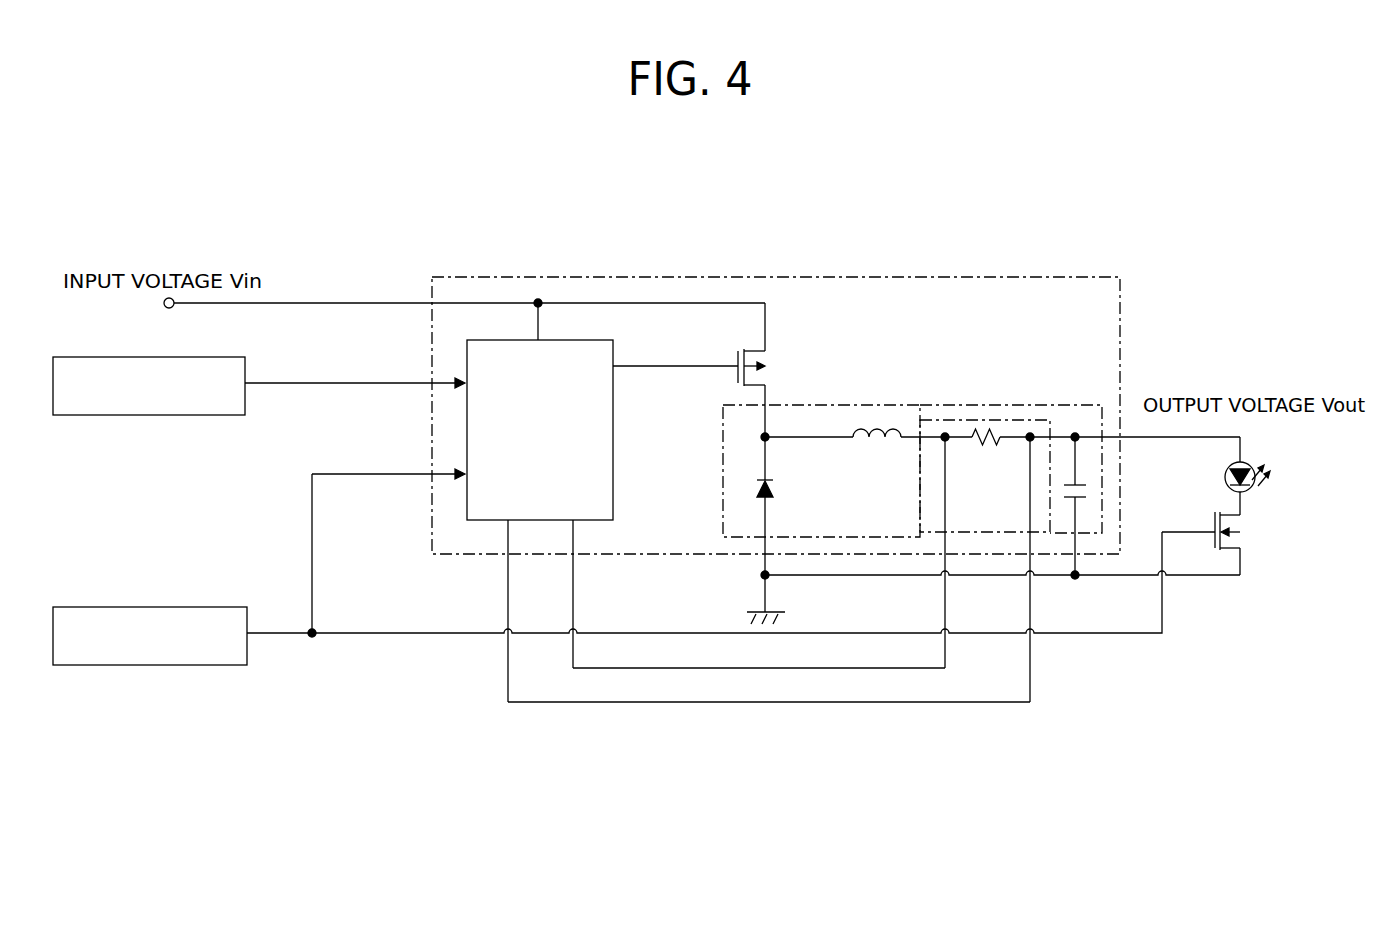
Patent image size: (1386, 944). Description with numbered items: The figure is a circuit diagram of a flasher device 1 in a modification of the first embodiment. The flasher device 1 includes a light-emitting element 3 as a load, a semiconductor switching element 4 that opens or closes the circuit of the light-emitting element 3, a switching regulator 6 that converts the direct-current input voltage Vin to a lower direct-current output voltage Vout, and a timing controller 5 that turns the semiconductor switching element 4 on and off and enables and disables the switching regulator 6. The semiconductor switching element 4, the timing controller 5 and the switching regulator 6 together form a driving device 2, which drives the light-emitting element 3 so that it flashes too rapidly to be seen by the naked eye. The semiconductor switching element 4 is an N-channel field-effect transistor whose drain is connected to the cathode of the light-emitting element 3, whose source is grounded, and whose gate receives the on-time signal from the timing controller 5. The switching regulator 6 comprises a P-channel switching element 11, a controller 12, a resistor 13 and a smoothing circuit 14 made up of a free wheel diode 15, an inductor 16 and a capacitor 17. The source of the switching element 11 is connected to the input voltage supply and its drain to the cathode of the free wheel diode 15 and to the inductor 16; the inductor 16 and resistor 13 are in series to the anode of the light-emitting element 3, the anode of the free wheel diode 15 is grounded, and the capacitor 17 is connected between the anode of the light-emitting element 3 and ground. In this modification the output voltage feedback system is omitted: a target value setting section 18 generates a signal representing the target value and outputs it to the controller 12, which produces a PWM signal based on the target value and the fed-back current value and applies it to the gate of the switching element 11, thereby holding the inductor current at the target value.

The flasher device 1 is at (360, 143).
The driving device 2 is at (376, 726).
The light-emitting element 3 is at (1257, 463).
The semiconductor switching element 4 is at (1213, 518).
The timing controller 5 is at (143, 603).
The switching regulator 6 is at (1093, 275).
The switching element 11 is at (740, 357).
The controller 12 is at (615, 455).
The resistor 13 is at (986, 430).
The smoothing circuit 14 is at (805, 403).
The free wheel diode 15 is at (778, 491).
The inductor 16 is at (876, 428).
The capacitor 17 is at (1088, 485).
The target value setting section 18 is at (125, 417).